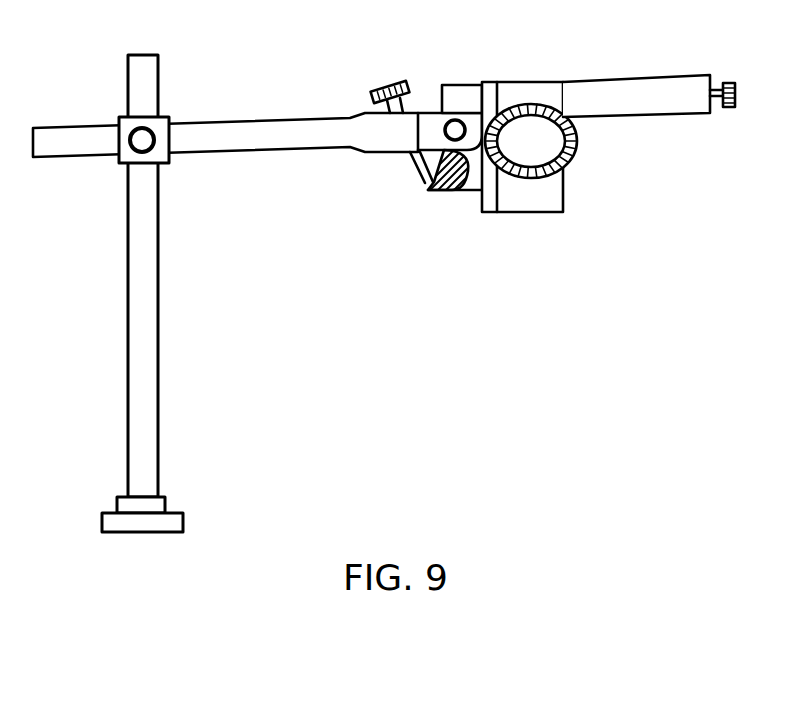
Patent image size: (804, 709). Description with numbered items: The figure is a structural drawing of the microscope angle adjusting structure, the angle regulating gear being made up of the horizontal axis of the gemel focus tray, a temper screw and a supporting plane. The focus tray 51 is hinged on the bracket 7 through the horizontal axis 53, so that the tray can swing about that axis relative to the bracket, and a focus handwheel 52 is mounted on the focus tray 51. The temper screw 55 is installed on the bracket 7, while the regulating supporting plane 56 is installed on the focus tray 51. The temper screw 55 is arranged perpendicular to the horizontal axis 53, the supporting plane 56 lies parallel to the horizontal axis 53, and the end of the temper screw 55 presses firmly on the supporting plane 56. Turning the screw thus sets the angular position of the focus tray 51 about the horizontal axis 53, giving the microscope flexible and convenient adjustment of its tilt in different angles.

The bracket 7 is at (210, 138).
The focus tray 51 is at (622, 103).
The focus handwheel 52 is at (527, 150).
The horizontal axis 53 is at (455, 130).
The temper screw 55 is at (390, 83).
The regulating supporting plane 56 is at (453, 193).